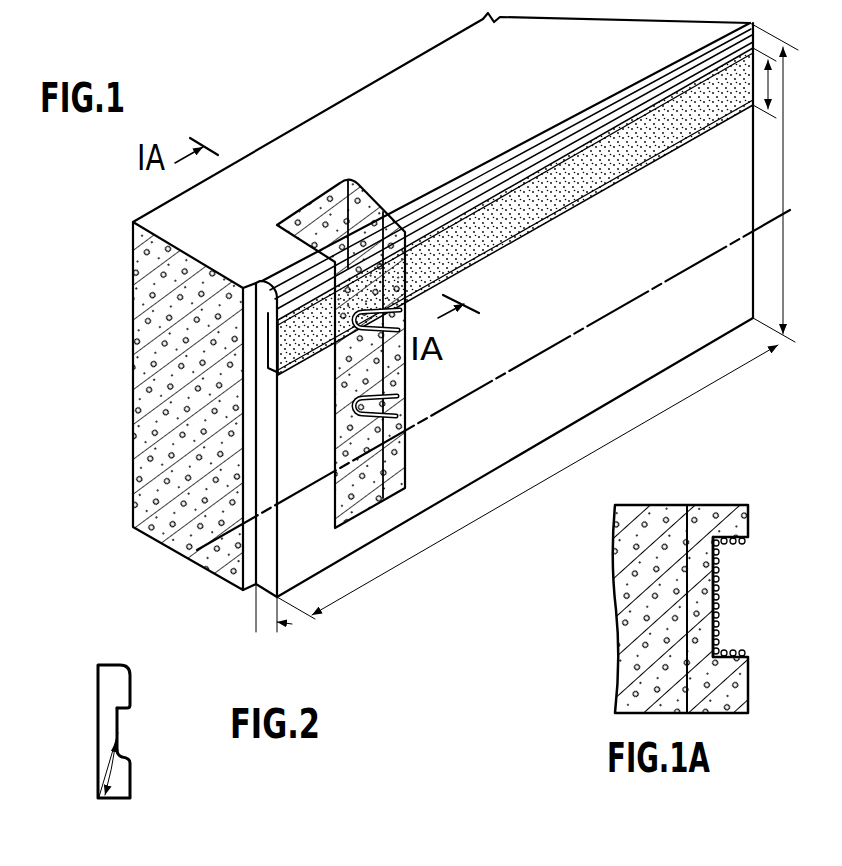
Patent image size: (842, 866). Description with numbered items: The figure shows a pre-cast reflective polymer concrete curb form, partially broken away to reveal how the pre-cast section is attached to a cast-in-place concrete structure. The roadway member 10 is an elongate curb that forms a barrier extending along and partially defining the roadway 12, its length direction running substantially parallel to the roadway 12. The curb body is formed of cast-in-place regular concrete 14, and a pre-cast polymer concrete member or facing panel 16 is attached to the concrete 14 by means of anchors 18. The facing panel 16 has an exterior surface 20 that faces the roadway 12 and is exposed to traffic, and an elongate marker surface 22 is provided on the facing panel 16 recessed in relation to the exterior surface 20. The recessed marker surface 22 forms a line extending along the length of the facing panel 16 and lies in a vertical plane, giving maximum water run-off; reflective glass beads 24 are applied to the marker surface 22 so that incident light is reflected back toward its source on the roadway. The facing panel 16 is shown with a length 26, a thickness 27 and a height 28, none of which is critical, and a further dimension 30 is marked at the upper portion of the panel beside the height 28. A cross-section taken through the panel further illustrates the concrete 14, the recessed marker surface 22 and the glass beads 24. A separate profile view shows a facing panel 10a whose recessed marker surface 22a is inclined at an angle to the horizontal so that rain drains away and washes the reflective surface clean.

In FIG. 1, the roadway member 10 is at (290, 85).
In FIG. 1, the roadway 12 is at (585, 326).
In FIG. 1, the cast-in-place regular concrete 14 is at (236, 289).
In FIG. 1A, the cast-in-place regular concrete 14 is at (632, 617).
In FIG. 1, the pre-cast facing panel 16 is at (664, 352).
In FIG. 1, the anchors 18 is at (402, 383).
In FIG. 1, the exterior surface 20 is at (293, 566).
In FIG. 1, the recessed marker surface 22 is at (322, 352).
In FIG. 1A, the recessed marker surface 22 is at (718, 623).
In FIG. 1, the reflective glass beads 24 is at (565, 181).
In FIG. 1A, the reflective glass beads 24 is at (718, 597).
In FIG. 1, the length 26 is at (583, 452).
In FIG. 1, the thickness 27 is at (256, 621).
In FIG. 1, the height 28 is at (782, 168).
In FIG. 1, the molding height 30 is at (770, 85).
In FIG. 2, the facing panel 10a is at (130, 670).
In FIG. 2, the recessed marker surface 22a is at (117, 722).